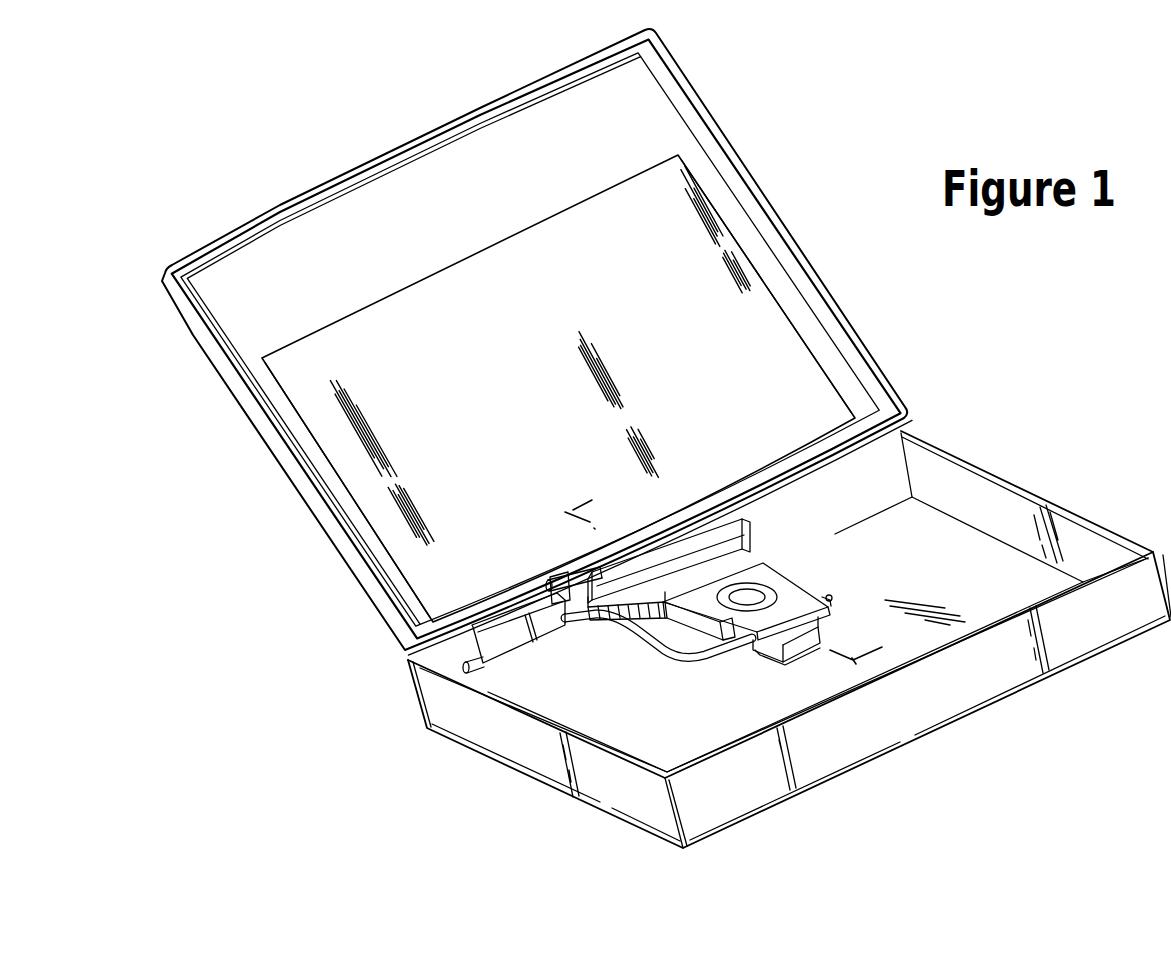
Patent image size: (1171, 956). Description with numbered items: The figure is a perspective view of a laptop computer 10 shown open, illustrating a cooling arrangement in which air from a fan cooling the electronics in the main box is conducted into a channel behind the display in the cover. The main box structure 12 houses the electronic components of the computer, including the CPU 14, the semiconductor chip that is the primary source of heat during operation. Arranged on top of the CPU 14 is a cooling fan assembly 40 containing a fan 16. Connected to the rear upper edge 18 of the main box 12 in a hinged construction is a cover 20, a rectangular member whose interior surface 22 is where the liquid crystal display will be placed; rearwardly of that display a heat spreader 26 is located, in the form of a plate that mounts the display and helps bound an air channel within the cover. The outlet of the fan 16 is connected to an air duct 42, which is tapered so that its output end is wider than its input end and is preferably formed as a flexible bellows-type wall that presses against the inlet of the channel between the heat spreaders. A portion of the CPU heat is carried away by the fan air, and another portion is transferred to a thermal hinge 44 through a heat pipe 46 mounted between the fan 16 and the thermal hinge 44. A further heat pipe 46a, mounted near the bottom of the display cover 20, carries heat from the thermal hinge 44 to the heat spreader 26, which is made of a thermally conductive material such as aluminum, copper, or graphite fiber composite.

The laptop computer 10 is at (327, 737).
The main box structure 12 is at (517, 750).
The CPU 14 is at (783, 650).
The fan 16 is at (750, 593).
The rear upper edge 18 is at (895, 460).
The cover 20 is at (293, 203).
The interior surface 22 is at (660, 120).
The heat spreader 26 is at (587, 228).
The cooling fan assembly 40 is at (700, 637).
The air duct 42 is at (710, 547).
The thermal hinge 44 is at (515, 640).
The heat pipe 46 is at (642, 647).
The heat pipe 46a is at (560, 590).